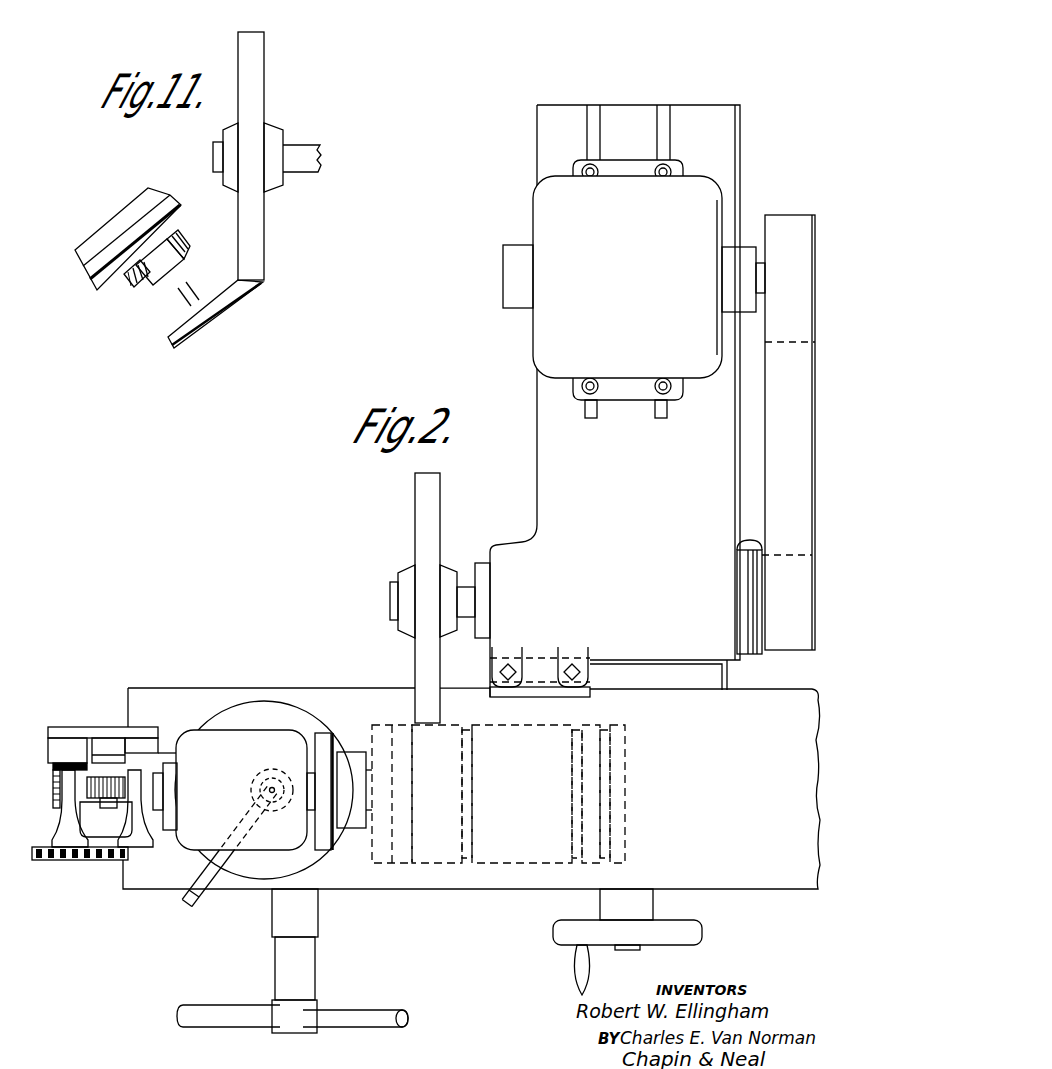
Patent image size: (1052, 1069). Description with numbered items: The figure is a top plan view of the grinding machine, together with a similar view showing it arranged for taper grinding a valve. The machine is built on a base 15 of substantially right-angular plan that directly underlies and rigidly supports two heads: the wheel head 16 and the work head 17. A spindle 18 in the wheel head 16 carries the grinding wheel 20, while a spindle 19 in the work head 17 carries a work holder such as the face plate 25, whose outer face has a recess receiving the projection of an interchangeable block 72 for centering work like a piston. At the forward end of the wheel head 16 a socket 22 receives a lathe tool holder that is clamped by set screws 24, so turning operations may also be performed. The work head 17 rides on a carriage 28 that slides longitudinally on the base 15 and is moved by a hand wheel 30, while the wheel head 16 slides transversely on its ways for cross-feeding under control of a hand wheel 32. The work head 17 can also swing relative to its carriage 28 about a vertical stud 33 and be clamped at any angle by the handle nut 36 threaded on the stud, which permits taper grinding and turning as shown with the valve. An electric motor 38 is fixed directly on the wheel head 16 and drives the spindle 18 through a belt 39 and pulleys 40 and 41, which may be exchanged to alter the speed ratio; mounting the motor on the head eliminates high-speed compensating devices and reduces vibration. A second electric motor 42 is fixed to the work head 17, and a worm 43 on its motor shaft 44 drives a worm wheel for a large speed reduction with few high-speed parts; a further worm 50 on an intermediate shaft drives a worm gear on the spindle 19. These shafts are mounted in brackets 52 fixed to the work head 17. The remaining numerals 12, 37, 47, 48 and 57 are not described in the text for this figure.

In FIG. 2, the base 12 is at (471, 788).
In FIG. 2, the base 15 is at (648, 677).
In FIG. 2, the wheel head 16 is at (615, 401).
In FIG. 11, the work head 17 is at (202, 315).
In FIG. 2, the work head 17 is at (310, 747).
In FIG. 11, the spindle 18 is at (302, 162).
In FIG. 2, the spindle 18 is at (468, 593).
In FIG. 11, the spindle 19 is at (137, 270).
In FIG. 11, the grinding wheel 20 is at (250, 80).
In FIG. 2, the grinding wheel 20 is at (427, 510).
In FIG. 2, the socket 22 is at (542, 694).
In FIG. 2, the set screws 24 is at (572, 663).
In FIG. 2, the face plate 25 is at (385, 853).
In FIG. 2, the carriage 28 is at (507, 877).
In FIG. 2, the hand wheel 30 is at (363, 1015).
In FIG. 2, the hand wheel 32 is at (573, 930).
In FIG. 2, the vertical stud 33 is at (265, 717).
In FIG. 2, the handle nut 36 is at (187, 903).
In FIG. 2, the column base plate 37 is at (728, 675).
In FIG. 2, the electric motor 38 is at (634, 277).
In FIG. 2, the belt 39 is at (778, 443).
In FIG. 2, the pulley 40 is at (823, 213).
In FIG. 2, the pulley 41 is at (760, 548).
In FIG. 2, the electric motor 42 is at (241, 790).
In FIG. 2, the worm 43 is at (117, 738).
In FIG. 2, the motor shaft 44 is at (152, 787).
In FIG. 2, the rack bar 47 is at (112, 853).
In FIG. 2, the clamp foot 48 is at (60, 860).
In FIG. 2, the worm 50 is at (57, 787).
In FIG. 2, the brackets 52 is at (118, 730).
In FIG. 11, the clamp nut 57 is at (160, 265).
In FIG. 2, the block 72 is at (400, 853).